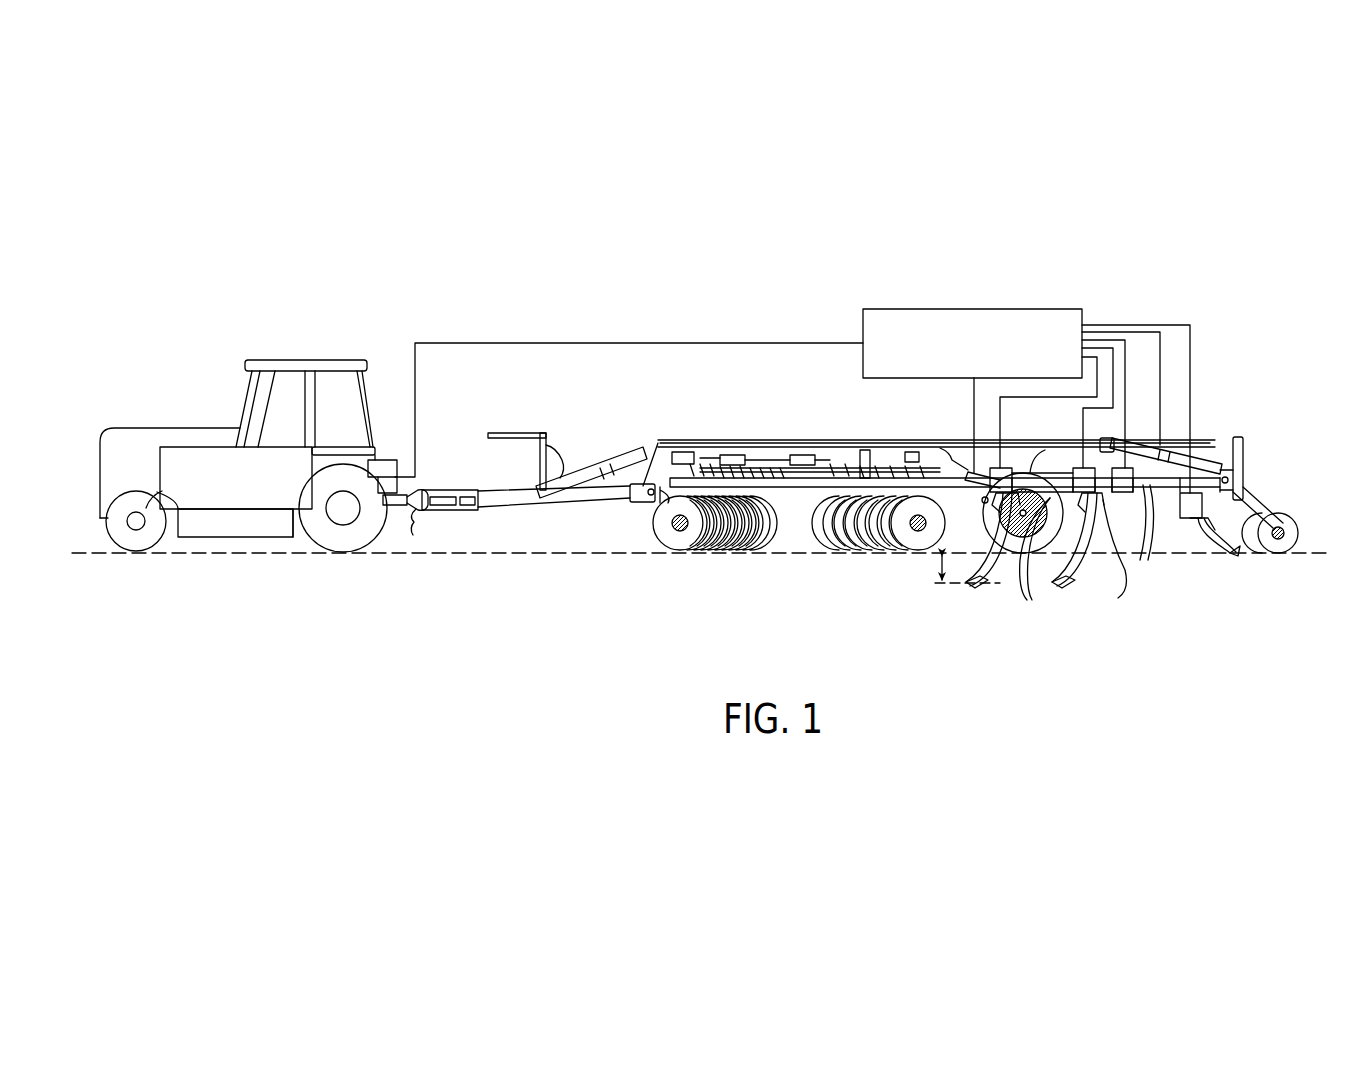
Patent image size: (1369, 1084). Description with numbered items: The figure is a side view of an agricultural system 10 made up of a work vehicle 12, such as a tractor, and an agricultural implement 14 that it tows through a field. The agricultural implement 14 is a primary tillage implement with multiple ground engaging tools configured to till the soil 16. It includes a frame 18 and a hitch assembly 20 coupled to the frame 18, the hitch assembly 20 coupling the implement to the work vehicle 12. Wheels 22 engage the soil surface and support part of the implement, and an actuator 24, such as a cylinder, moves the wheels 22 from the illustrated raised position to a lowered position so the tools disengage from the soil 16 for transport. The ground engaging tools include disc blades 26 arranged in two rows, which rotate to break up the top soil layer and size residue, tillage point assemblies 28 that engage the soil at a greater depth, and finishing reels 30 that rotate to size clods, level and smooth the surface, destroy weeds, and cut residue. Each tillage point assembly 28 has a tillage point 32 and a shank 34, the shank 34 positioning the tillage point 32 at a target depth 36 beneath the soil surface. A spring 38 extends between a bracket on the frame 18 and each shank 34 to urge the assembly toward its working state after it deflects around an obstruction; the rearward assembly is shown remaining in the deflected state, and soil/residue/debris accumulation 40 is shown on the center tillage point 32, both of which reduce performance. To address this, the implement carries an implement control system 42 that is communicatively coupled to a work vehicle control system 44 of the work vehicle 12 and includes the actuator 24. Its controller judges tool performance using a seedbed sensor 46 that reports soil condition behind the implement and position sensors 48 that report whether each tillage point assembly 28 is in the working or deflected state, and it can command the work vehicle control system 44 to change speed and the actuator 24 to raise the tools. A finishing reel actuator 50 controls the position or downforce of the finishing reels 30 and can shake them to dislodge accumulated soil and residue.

The agricultural system 10 is at (771, 311).
The work vehicle 12 is at (288, 334).
The agricultural implement 14 is at (676, 421).
The soil 16 is at (488, 551).
The frame 18 is at (1034, 470).
The hitch assembly 20 is at (563, 501).
The wheels 22 is at (1019, 470).
The actuator 24 is at (962, 471).
The disc blades 26 is at (721, 562).
The tillage point assemblies 28 is at (961, 590).
The finishing reels 30 is at (1301, 563).
The tillage point 32 is at (1074, 590).
The shank 34 is at (1005, 566).
The target depth 36 is at (936, 568).
The spring 38 is at (963, 522).
The soil/residue/debris accumulation 40 is at (1056, 590).
The implement control system 42 is at (1086, 321).
The work vehicle control system 44 is at (160, 480).
The seedbed sensor 46 is at (1200, 450).
The position sensors 48 is at (905, 463).
The finishing reel actuator 50 is at (1165, 455).